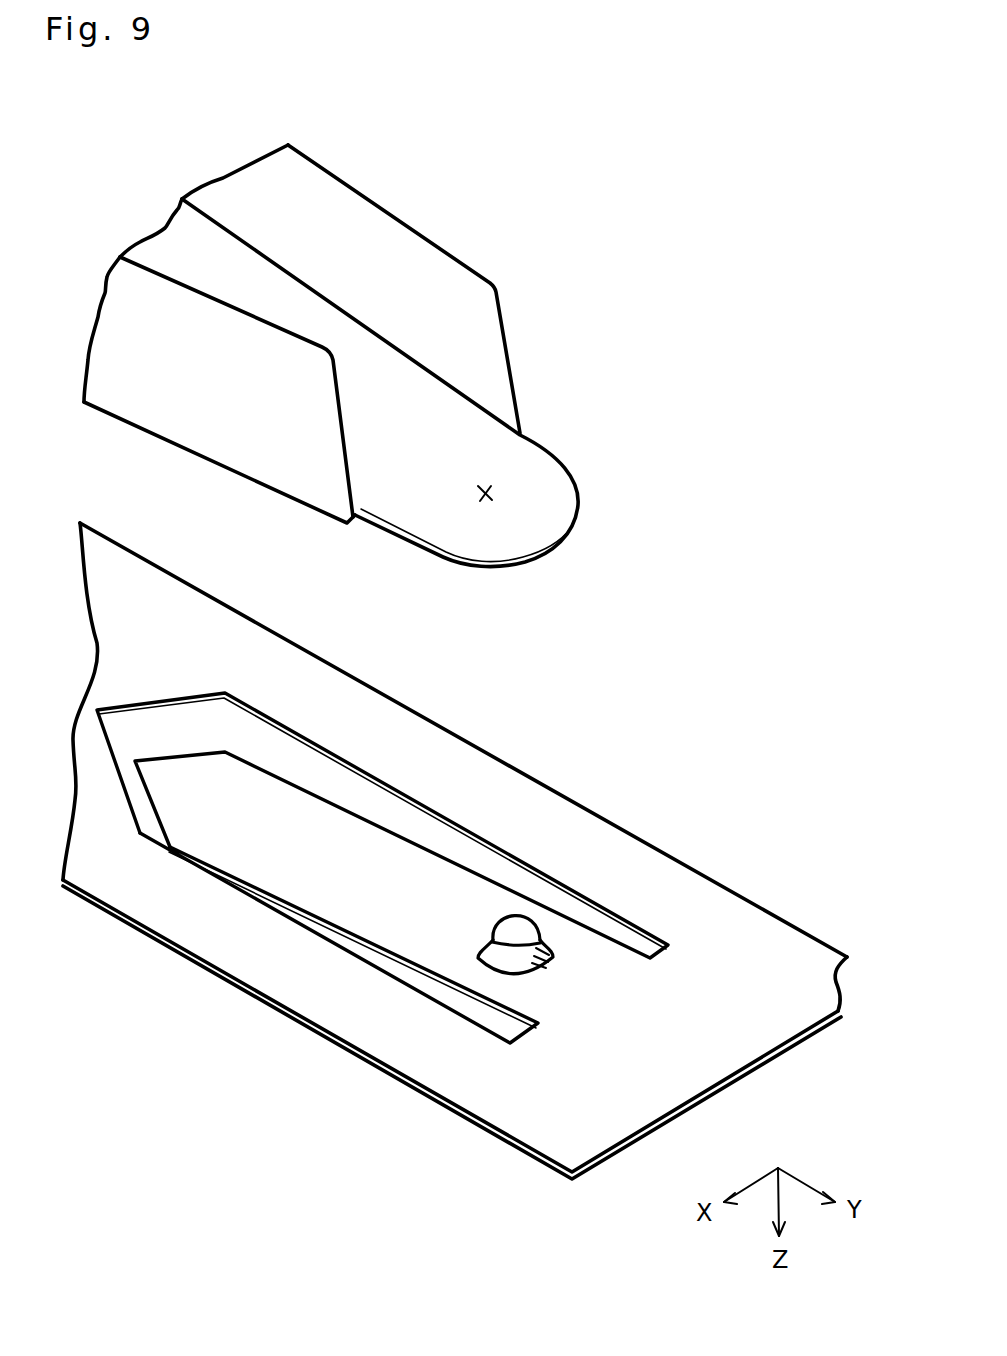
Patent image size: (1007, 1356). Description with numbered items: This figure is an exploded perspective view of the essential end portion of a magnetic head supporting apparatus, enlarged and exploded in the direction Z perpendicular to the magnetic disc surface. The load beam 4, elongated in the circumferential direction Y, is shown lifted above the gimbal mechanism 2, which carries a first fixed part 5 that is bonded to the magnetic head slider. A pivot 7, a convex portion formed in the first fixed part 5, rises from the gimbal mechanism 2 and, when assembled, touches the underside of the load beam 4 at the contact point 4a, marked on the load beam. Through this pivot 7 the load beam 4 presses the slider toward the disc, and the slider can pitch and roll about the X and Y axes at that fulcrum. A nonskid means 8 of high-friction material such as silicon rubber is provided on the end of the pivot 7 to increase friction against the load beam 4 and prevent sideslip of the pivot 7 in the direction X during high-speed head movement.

The gimbal mechanism 2 is at (613, 837).
The load beam 4 is at (562, 483).
The contact point 4a is at (488, 500).
The first fixed part 5 is at (290, 873).
The pivot 7 is at (545, 972).
The top of projection 8 is at (490, 923).